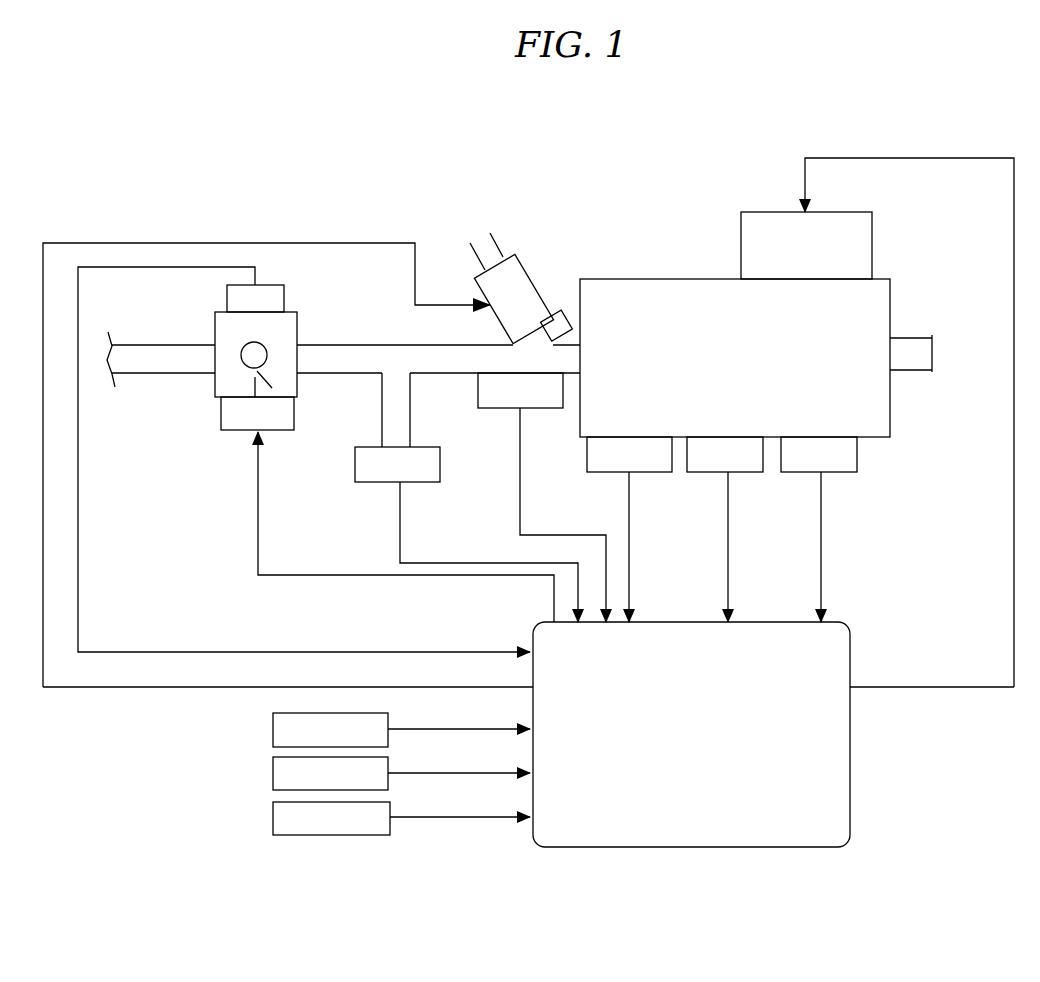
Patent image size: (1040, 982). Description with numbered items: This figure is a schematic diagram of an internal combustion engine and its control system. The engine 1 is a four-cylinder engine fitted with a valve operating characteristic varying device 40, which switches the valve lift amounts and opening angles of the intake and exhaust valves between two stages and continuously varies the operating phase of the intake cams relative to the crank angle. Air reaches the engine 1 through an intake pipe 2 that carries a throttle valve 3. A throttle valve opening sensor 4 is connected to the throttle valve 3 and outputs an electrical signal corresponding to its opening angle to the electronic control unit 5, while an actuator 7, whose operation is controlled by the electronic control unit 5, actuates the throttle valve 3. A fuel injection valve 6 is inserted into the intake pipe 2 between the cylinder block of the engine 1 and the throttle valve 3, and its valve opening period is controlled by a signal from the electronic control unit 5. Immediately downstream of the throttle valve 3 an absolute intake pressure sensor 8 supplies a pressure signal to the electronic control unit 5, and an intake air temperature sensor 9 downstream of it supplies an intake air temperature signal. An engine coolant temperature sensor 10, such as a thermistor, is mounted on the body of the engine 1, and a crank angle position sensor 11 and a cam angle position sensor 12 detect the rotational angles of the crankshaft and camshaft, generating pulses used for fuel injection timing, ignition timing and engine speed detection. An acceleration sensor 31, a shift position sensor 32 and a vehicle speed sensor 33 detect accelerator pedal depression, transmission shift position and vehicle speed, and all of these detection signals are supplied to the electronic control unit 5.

The engine 1 is at (650, 279).
The intake pipe 2 is at (386, 345).
The throttle valve 3 is at (243, 336).
The throttle valve opening sensor 4 is at (263, 285).
The electronic control unit 5 is at (773, 621).
The fuel injection valve 6 is at (535, 278).
The actuator 7 is at (287, 430).
The absolute intake pressure sensor 8 is at (425, 482).
The intake air temperature sensor 9 is at (548, 408).
The engine coolant temperature sensor 10 is at (660, 475).
The crank angle position sensor 11 is at (752, 475).
The cam angle position sensor 12 is at (848, 475).
The acceleration sensor 31 is at (273, 728).
The shift position sensor 32 is at (273, 772).
The vehicle speed sensor 33 is at (273, 816).
The valve operating characteristic varying device 40 is at (757, 212).